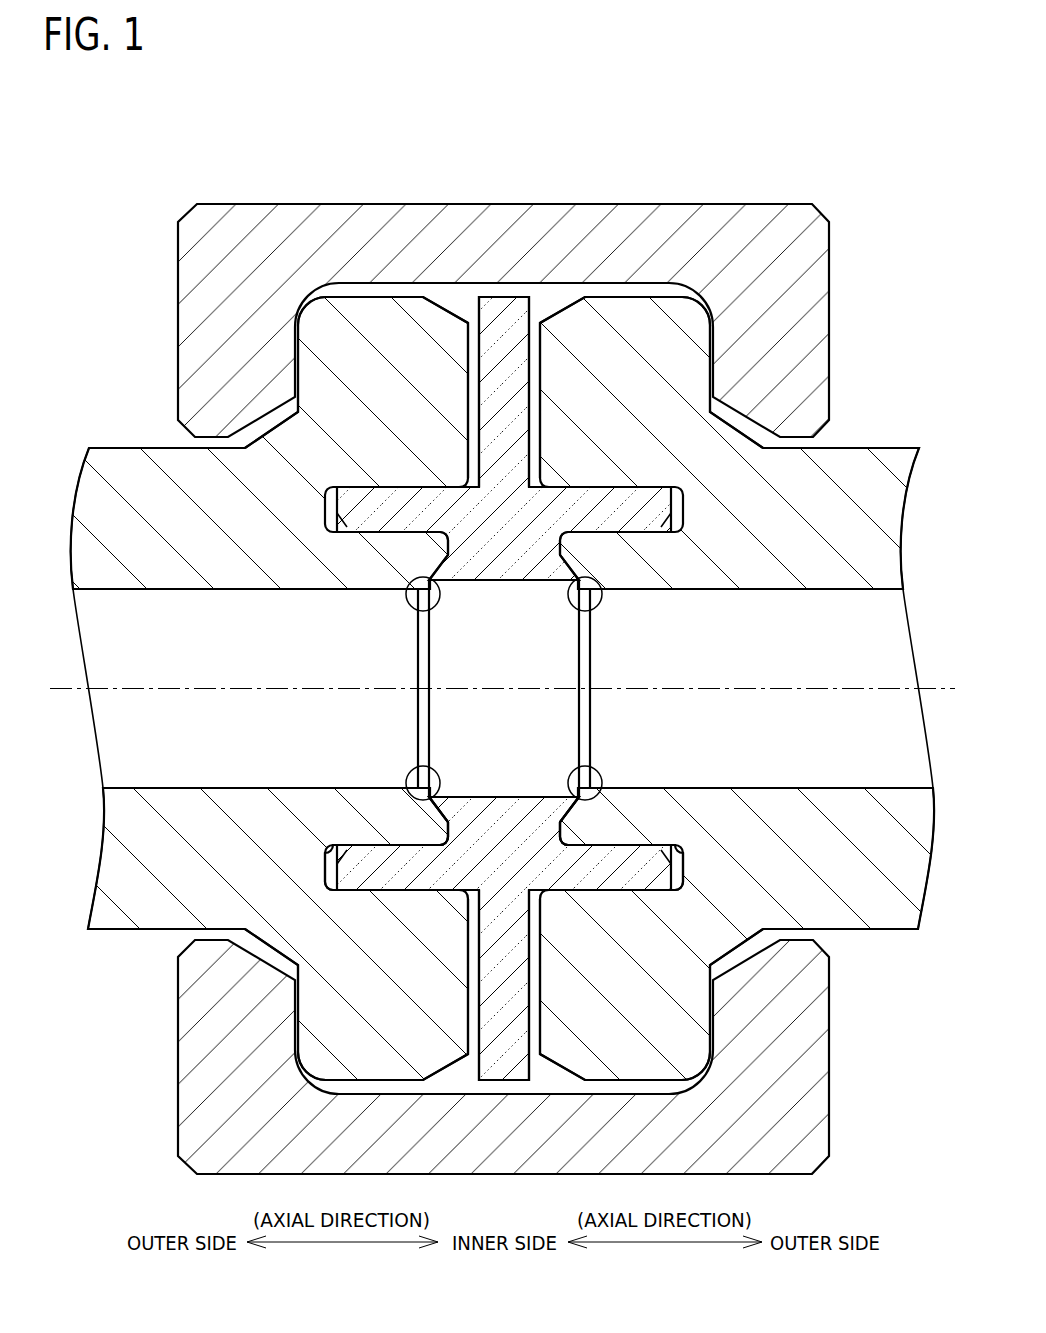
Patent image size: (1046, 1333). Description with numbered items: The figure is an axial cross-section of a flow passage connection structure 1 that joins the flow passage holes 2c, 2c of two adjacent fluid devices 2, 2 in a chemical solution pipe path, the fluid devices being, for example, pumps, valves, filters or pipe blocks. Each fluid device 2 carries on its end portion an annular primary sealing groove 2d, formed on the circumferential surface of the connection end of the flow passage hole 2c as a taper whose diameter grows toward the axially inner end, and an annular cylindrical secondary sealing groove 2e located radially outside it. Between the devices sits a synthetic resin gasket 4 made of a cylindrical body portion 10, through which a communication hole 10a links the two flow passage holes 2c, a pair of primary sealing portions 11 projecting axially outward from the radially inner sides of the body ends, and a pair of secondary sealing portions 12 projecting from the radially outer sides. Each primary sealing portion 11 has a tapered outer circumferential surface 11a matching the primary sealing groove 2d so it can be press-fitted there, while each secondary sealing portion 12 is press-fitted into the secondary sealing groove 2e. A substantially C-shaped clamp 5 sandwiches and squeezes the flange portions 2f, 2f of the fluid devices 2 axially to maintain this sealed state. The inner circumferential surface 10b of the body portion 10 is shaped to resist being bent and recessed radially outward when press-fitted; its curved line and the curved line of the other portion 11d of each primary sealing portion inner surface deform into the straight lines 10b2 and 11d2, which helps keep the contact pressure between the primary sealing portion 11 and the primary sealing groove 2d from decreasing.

The flow passage connection structure 1 is at (168, 148).
The fluid device 2 is at (122, 447).
The flow passage hole 2c is at (259, 672).
The primary sealing groove 2d is at (417, 608).
The secondary sealing groove 2e is at (335, 520).
The flange portion 2f is at (395, 358).
The gasket 4 is at (505, 288).
The clamp 5 is at (260, 213).
The body portion 10 is at (483, 573).
The communication hole 10a is at (480, 674).
The inner circumferential surface 10b is at (533, 583).
The straight line 10b2 is at (504, 619).
The primary sealing portion 11 is at (455, 805).
The outer circumferential surface 11a is at (402, 815).
The other portion 11d is at (437, 795).
The straight line 11d2 is at (504, 748).
The secondary sealing portion 12 is at (370, 866).